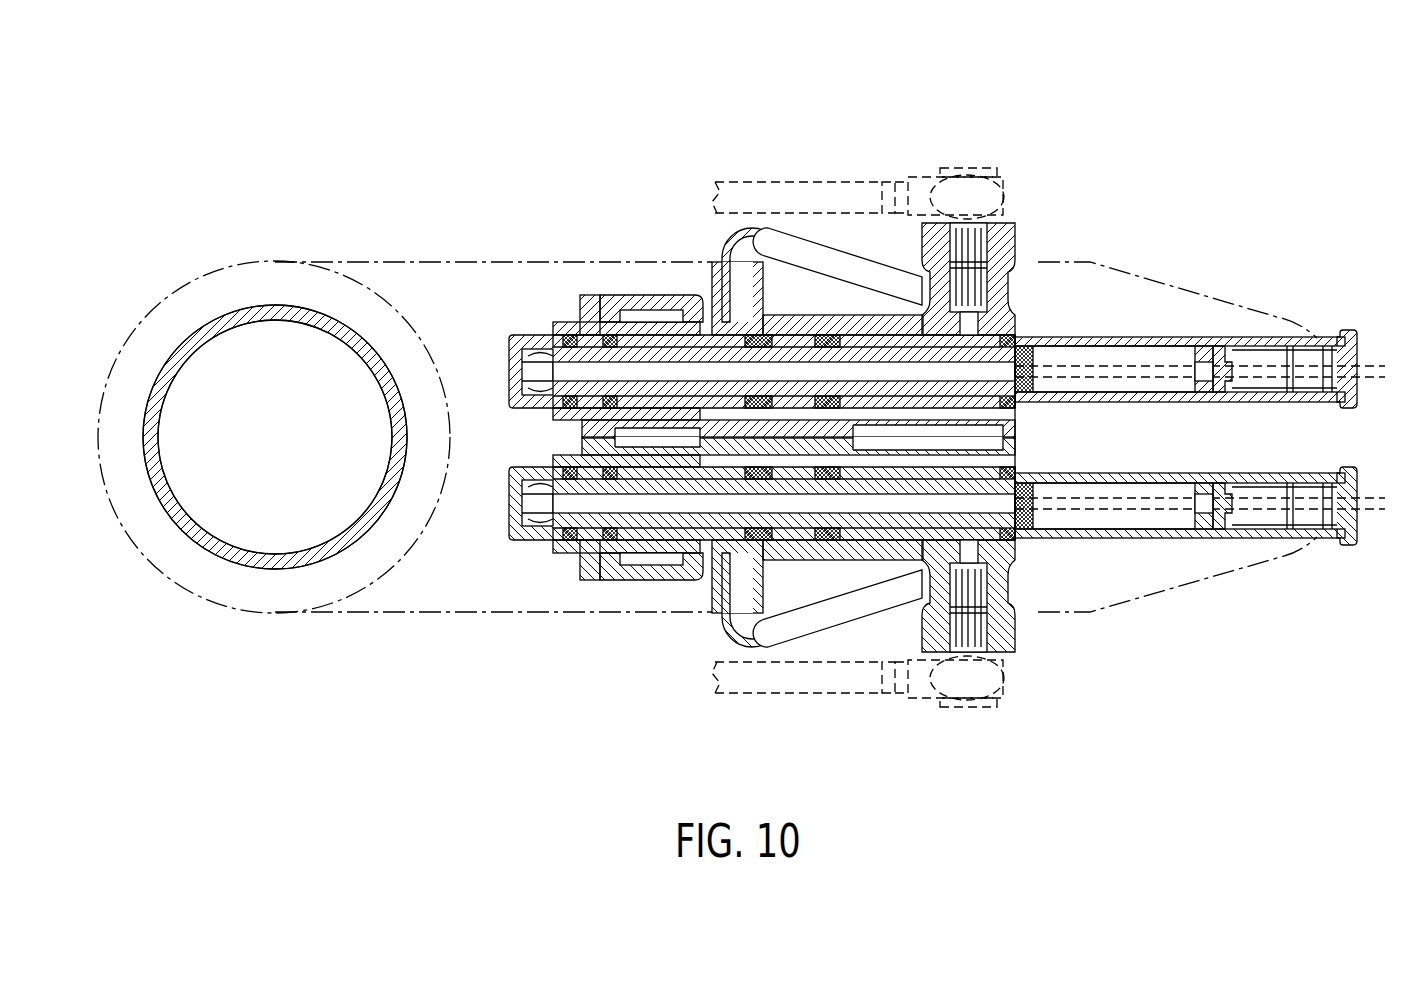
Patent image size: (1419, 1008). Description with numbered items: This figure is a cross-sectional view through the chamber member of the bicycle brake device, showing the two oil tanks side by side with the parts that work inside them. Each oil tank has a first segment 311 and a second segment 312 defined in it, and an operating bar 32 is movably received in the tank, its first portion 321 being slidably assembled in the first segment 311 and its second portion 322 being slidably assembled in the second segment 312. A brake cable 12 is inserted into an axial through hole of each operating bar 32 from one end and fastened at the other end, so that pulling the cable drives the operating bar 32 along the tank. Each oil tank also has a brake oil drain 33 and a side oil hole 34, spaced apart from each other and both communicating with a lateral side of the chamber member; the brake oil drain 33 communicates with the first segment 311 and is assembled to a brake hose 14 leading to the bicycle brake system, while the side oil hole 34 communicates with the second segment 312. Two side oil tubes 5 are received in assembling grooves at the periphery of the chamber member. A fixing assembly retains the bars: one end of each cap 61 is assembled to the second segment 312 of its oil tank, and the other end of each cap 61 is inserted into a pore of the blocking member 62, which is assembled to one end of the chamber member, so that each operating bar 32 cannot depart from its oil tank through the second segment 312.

The side oil tube 5 is at (820, 615).
The brake cable 12 is at (1382, 355).
The brake hose 14 is at (910, 175).
The operating bar 32 is at (525, 345).
The brake oil drain 33 is at (996, 238).
The side oil hole 34 is at (762, 232).
The cap 61 is at (662, 560).
The blocking member 62 is at (597, 582).
The first segment 311 is at (897, 337).
The second segment 312 is at (713, 333).
The first portion 321 is at (810, 337).
The second portion 322 is at (622, 313).